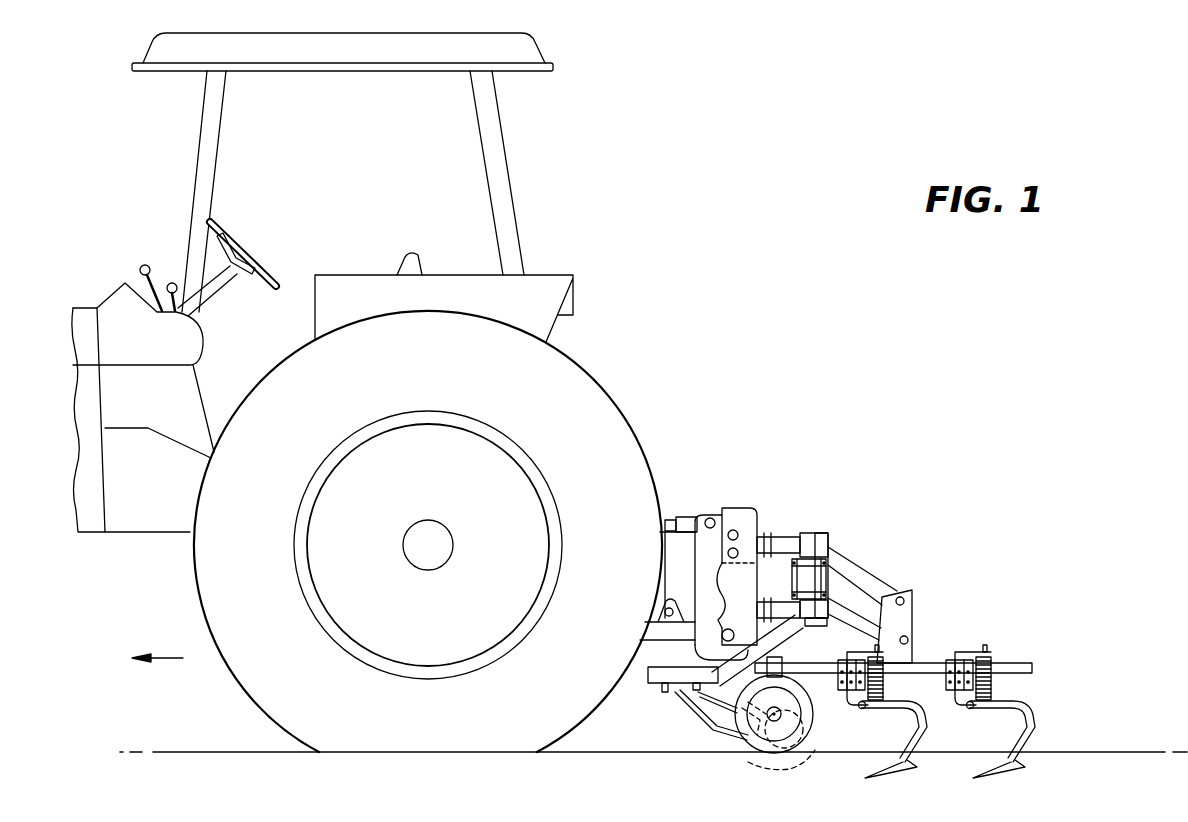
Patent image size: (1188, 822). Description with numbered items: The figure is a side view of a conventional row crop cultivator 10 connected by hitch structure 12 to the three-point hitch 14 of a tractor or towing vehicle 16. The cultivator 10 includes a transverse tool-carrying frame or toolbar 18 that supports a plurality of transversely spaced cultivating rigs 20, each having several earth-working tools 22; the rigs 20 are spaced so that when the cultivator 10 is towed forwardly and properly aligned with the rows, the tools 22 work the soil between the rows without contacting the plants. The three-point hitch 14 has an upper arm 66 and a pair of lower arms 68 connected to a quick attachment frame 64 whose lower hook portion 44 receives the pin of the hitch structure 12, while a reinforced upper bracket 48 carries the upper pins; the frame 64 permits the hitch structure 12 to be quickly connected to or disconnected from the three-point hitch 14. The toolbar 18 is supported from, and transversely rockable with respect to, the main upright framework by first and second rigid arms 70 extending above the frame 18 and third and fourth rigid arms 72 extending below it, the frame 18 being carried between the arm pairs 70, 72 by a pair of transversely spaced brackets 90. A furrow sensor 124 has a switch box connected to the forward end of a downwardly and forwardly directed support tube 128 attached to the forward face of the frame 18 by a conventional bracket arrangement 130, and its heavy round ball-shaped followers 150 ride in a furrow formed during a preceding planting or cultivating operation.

The row crop cultivator 10 is at (992, 542).
The hitch structure 12 is at (743, 482).
The three-point hitch 14 is at (677, 482).
The tractor or towing vehicle 16 is at (695, 242).
The transverse tool-carrying frame or toolbar 18 is at (830, 572).
The cultivating rigs 20 is at (983, 632).
The earth-working tools 22 is at (982, 767).
The lower hook portion 44 is at (710, 660).
The reinforced upper bracket 48 is at (757, 508).
The quick attachment frame 64 is at (695, 553).
The upper arm 66 is at (683, 517).
The lower arms 68 is at (657, 627).
The first and second rigid arms 70 is at (783, 530).
The third and fourth rigid arms 72 is at (780, 597).
The brackets 90 is at (830, 525).
The furrow sensor 124 is at (673, 710).
The support tube 128 is at (775, 633).
The bracket arrangement 130 is at (807, 624).
The ball-shaped followers 150 is at (752, 758).